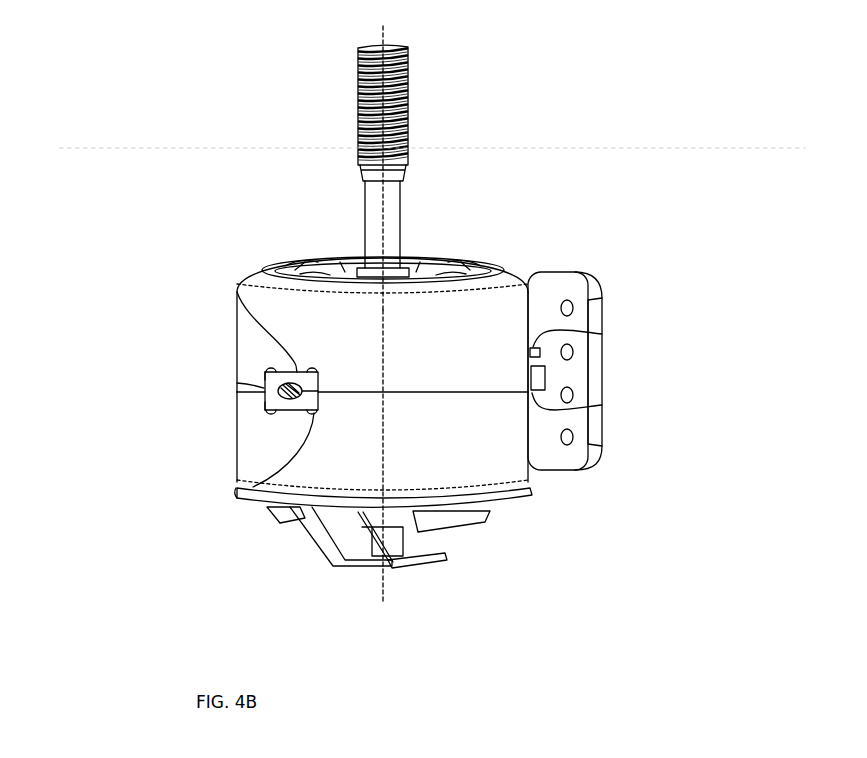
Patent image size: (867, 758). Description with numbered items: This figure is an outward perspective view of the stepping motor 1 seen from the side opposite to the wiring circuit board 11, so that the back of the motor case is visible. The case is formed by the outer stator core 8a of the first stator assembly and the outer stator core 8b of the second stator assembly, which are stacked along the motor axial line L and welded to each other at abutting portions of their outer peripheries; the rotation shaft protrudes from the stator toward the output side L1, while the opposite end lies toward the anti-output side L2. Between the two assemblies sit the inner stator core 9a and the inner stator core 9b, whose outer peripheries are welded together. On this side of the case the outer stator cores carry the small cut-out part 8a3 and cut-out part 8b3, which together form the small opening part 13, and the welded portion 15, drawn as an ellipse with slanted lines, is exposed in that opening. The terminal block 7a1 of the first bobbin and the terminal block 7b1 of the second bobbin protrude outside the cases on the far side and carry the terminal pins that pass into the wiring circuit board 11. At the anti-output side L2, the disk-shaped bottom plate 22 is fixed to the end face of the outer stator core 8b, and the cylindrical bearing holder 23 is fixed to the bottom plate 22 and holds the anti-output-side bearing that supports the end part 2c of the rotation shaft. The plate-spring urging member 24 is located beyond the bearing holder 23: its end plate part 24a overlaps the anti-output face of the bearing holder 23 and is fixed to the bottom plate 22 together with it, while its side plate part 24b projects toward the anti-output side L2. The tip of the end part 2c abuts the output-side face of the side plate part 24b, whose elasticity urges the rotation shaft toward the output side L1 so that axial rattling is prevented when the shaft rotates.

The stepping motor 1 is at (194, 156).
The end part on the anti-output side 2c is at (403, 547).
The terminal block 7a1 is at (600, 333).
The terminal block 7b1 is at (600, 407).
The outer stator core 8a is at (530, 313).
The cut-out part 8a3 is at (265, 378).
The outer stator core 8b is at (530, 440).
The cut-out part 8b3 is at (270, 413).
The inner stator core 9a is at (264, 386).
The inner stator core 9b is at (264, 397).
The wiring circuit board 11 is at (597, 290).
The small opening part 13 is at (237, 497).
The welded portion 15 is at (237, 292).
The bottom plate 22 is at (532, 495).
The bearing holder 23 is at (373, 518).
The urging member 24 is at (310, 547).
The end plate part 24a is at (490, 512).
The side plate part 24b is at (438, 562).
The motor axial line L is at (366, 202).
The output side L1 is at (384, 158).
The anti-output side L2 is at (384, 467).